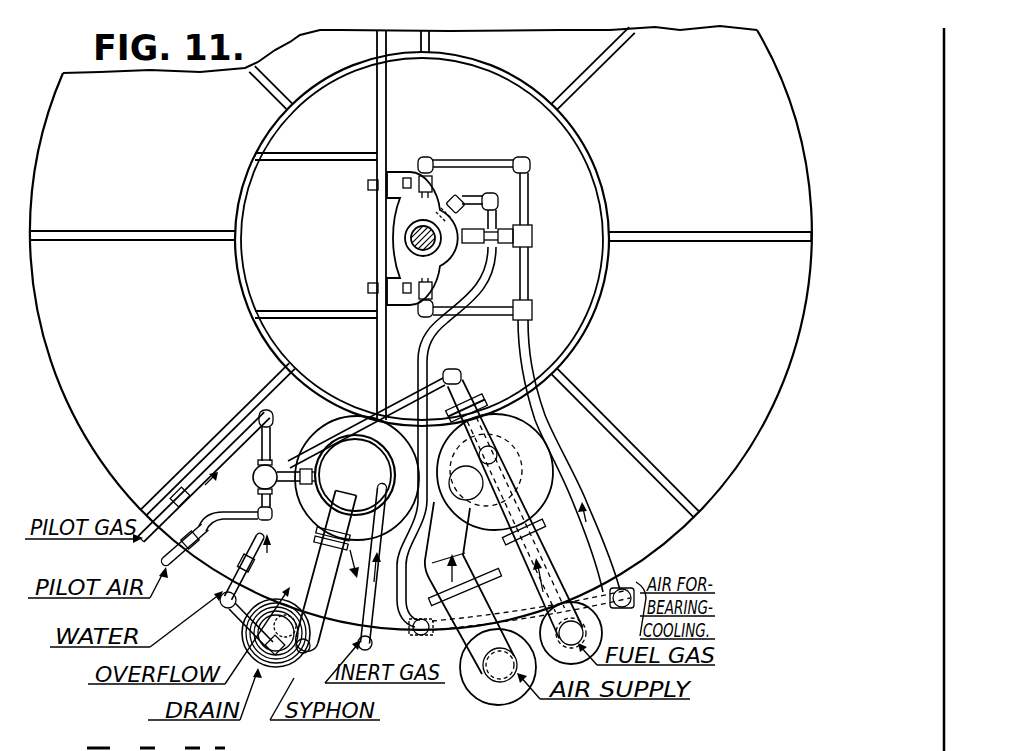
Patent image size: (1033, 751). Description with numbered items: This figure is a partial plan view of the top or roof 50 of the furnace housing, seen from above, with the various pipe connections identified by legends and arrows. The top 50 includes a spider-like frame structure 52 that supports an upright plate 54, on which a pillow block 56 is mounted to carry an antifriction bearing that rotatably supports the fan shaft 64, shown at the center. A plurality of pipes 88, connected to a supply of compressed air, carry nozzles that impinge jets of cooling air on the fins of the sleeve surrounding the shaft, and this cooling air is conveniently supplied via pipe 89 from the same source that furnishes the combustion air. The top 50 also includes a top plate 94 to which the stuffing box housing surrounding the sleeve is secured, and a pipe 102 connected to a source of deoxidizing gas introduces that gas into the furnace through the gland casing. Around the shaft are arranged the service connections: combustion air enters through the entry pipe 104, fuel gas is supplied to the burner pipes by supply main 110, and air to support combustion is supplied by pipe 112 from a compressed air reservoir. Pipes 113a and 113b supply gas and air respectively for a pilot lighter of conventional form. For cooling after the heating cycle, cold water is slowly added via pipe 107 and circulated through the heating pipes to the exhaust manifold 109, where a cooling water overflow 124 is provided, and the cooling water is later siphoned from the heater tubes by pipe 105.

The top or roof 50 is at (96, 463).
The spider-like frame structure 52 is at (584, 71).
The upright plate 54 is at (388, 93).
The pillow block 56 is at (398, 219).
The shaft 64 is at (412, 240).
The pipes 88 is at (450, 160).
The pipe 89 is at (590, 498).
The top plate 94 is at (708, 158).
The pipe 102 is at (442, 201).
The entry pipe 104 is at (520, 460).
The pipe 105 is at (328, 597).
The pipe 107 is at (254, 543).
The exhaust manifold 109 is at (345, 456).
The supply main 110 is at (545, 556).
The pipe 112 is at (503, 688).
The pipe 113a is at (235, 441).
The pipe 113b is at (228, 505).
The cooling water overflow 124 is at (346, 492).